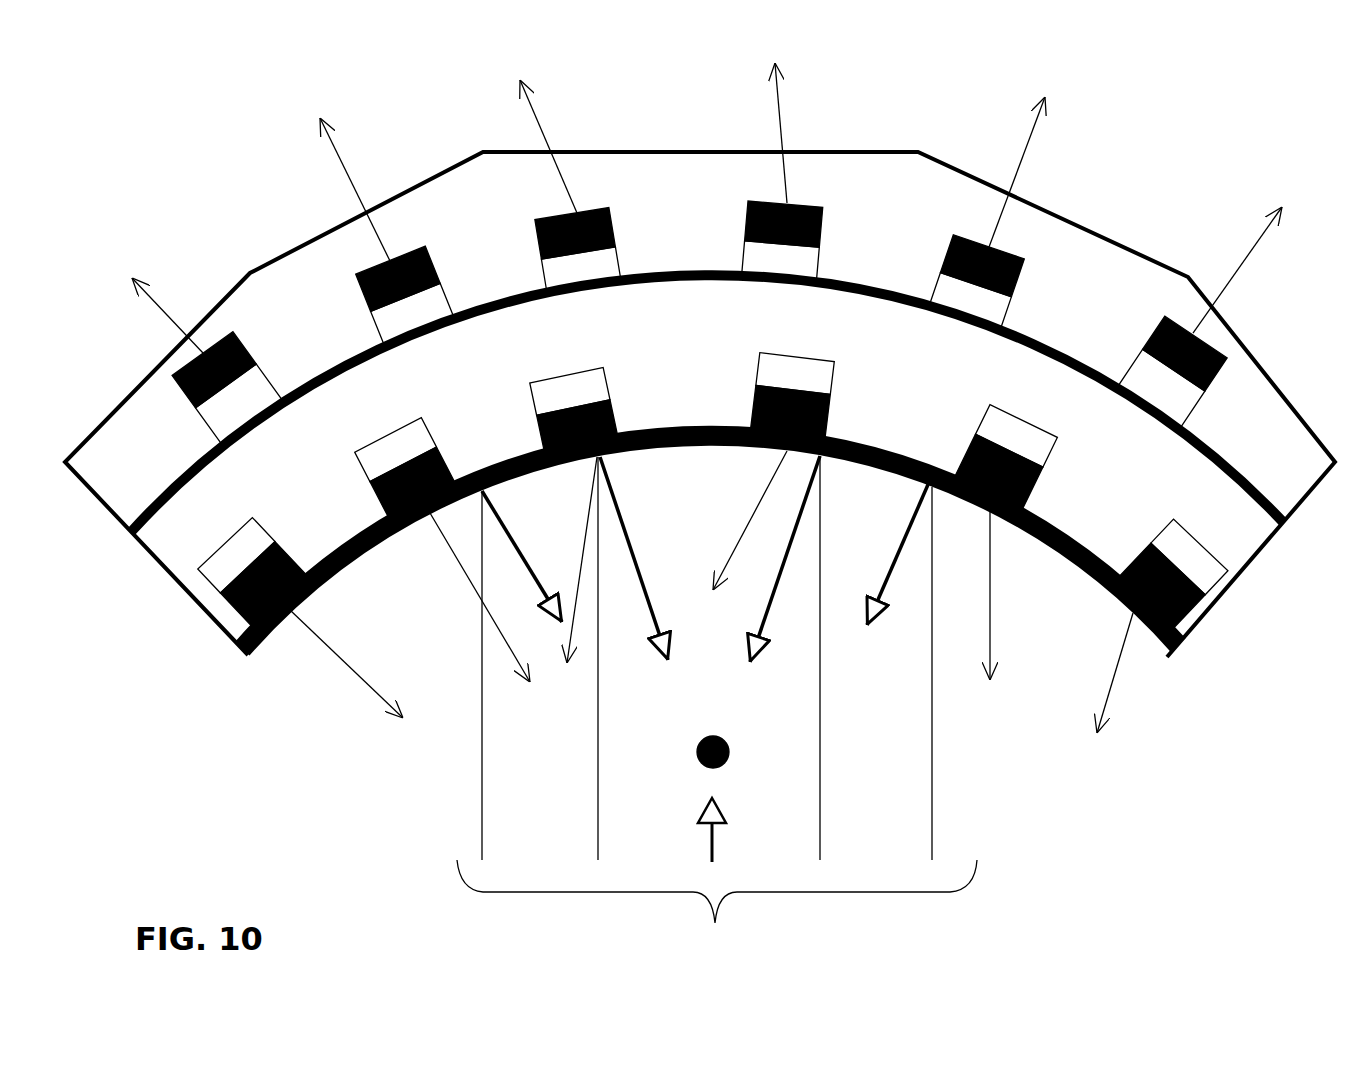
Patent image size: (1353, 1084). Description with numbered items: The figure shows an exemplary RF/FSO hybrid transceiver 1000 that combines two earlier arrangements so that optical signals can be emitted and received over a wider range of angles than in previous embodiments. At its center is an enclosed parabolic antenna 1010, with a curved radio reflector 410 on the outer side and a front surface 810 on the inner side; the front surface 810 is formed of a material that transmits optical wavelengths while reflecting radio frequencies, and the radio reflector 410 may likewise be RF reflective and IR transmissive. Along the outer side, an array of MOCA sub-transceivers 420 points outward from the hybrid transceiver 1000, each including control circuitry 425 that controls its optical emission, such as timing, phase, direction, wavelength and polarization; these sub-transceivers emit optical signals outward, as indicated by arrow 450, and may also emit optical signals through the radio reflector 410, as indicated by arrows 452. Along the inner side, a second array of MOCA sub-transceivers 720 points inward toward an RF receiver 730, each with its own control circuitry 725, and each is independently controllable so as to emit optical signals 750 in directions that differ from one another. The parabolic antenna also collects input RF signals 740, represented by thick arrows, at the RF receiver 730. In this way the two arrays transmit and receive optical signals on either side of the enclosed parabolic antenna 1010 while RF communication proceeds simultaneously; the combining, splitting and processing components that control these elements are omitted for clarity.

The RF/FSO hybrid transceiver 1000 is at (233, 150).
The enclosed parabolic antenna 1010 is at (160, 570).
The radio reflector 410 is at (168, 495).
The MOCA sub-transceiver 420 is at (253, 337).
The control circuitry 425 is at (270, 373).
The arrow indicating outward optical signals 450 is at (165, 313).
The arrows indicating optical signals emitted through the radio reflector 452 is at (350, 172).
The MOCA sub-transceiver 720 is at (295, 556).
The detector substrate 725 is at (367, 443).
The RF receiver 730 is at (697, 762).
The input RF signals 740 is at (717, 711).
The optical signals 750 is at (340, 663).
The front surface 810 is at (261, 650).